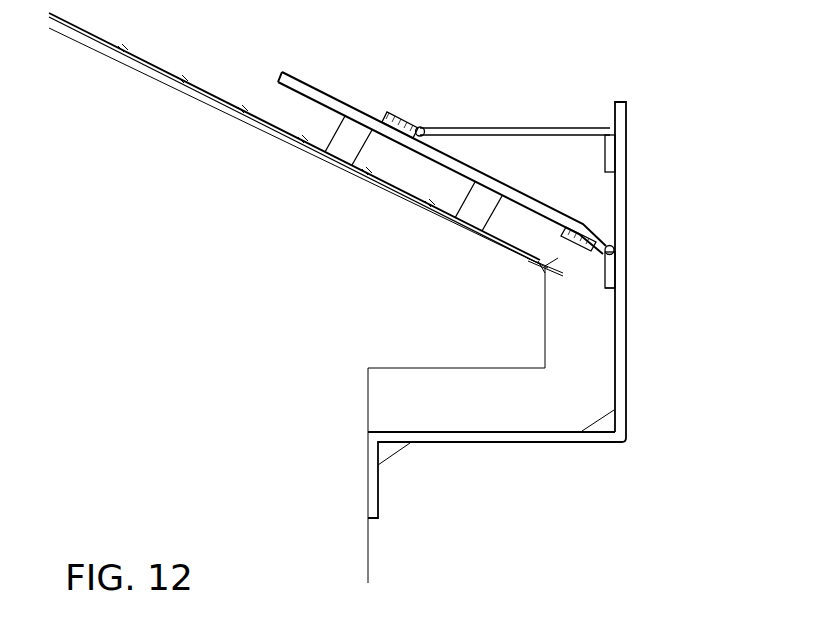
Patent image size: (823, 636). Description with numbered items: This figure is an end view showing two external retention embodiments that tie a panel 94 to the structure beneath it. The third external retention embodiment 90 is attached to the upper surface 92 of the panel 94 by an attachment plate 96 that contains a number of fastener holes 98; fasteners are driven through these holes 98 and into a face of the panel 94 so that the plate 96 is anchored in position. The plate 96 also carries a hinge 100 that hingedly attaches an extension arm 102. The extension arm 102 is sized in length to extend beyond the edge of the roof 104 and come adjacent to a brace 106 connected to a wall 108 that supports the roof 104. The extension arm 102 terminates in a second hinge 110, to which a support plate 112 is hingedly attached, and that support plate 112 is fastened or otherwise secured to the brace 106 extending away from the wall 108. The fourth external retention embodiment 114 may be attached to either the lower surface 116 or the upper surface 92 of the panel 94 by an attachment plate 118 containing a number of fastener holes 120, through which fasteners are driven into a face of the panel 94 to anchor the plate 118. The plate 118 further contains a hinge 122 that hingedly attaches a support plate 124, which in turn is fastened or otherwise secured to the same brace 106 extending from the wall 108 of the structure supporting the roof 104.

The third external retention embodiment 90 is at (514, 52).
The upper surface 92 is at (345, 104).
The panel 94 is at (297, 74).
The attachment plate 96 is at (403, 120).
The fastener holes 98 is at (404, 139).
The hinge 100 is at (423, 128).
The extension arm 102 is at (573, 129).
The roof 104 is at (197, 86).
The brace 106 is at (560, 455).
The wall 108 is at (368, 569).
The second hinge 110 is at (617, 122).
The support plate 112 is at (612, 146).
The fourth external retention embodiment 114 is at (618, 271).
The lower surface 116 is at (476, 184).
The attachment plate 118 is at (592, 253).
The fastener holes 120 is at (559, 251).
The hinge 122 is at (613, 249).
The support plate 124 is at (612, 288).